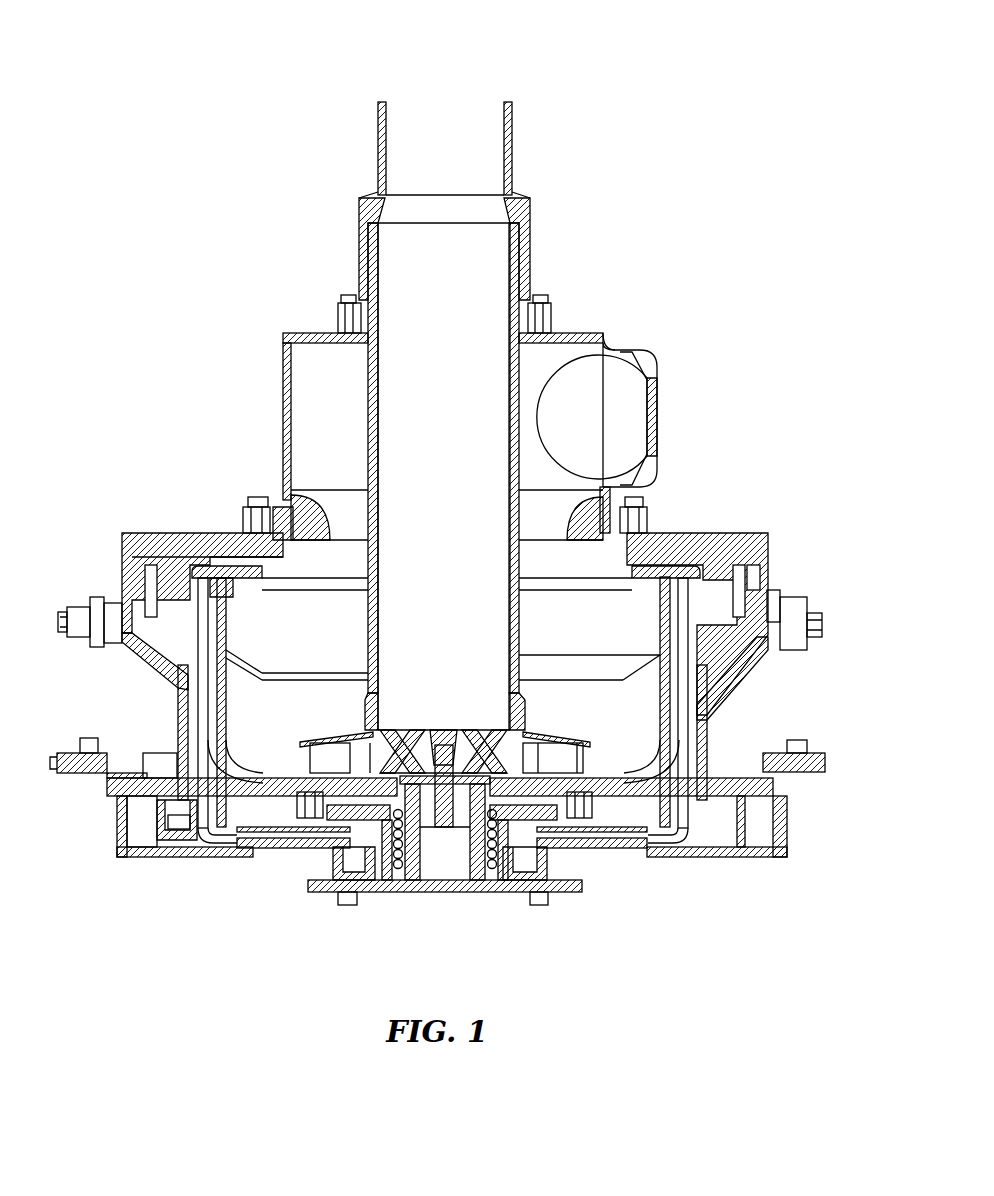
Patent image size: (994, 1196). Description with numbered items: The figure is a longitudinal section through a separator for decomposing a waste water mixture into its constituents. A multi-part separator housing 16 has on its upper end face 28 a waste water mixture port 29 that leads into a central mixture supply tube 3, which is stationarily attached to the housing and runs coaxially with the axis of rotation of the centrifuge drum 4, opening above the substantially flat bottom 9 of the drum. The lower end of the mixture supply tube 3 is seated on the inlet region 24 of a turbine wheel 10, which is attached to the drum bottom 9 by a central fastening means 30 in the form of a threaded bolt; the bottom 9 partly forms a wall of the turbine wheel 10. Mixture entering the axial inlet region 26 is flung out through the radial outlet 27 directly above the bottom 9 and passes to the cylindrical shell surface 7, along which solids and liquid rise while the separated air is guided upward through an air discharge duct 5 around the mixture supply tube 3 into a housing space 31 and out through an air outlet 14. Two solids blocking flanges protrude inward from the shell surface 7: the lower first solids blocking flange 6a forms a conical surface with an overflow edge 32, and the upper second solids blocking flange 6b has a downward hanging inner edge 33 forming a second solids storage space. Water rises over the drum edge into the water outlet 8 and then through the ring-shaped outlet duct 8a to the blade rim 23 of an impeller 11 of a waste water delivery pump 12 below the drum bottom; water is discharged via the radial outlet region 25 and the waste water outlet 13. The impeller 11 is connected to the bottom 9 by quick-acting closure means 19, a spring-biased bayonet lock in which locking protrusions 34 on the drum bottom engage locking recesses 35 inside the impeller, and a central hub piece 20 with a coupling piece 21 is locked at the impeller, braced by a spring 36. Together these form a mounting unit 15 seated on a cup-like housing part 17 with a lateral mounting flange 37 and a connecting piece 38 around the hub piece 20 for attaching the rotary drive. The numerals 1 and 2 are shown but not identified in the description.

The upper end face 28 is at (570, 60).
The waste water mixture port 29 is at (512, 142).
The housing space 31 is at (312, 355).
The mixture supply tube 3 is at (368, 395).
The air outlet 14 is at (640, 415).
The centrifuge drum 4 is at (258, 510).
The air discharge duct 5 is at (333, 528).
The second solids blocking flange 6b is at (262, 582).
The inner edge 33 is at (190, 575).
The shell surface 7 is at (145, 607).
The bolt 2 is at (608, 618).
The ring-shaped outlet duct 8a is at (672, 560).
The separator housing 16 is at (762, 535).
The water outlet 8 is at (715, 633).
The overflow edge 32 is at (296, 680).
The first solids blocking flange 6a is at (200, 688).
The valve body 1 is at (620, 699).
The lateral mounting flange 37 is at (795, 640).
The turbine wheel 10 is at (360, 748).
The central fastening means 30 is at (440, 733).
The axial inlet region 26 is at (483, 724).
The radial outlet 27 is at (298, 766).
The passage 34 is at (582, 800).
The inlet region 24 is at (177, 789).
The bottom 9 is at (198, 815).
The radial outlet region 25 is at (147, 812).
The waste water outlet 13 is at (140, 838).
The blade rim 23 is at (178, 830).
The impeller 11 is at (212, 862).
The quick-acting closure means 19 is at (280, 848).
The mounting unit 15 is at (592, 850).
The locking recesses 35 is at (612, 840).
The housing part 17 is at (678, 852).
The waste water delivery pump 12 is at (700, 830).
The spring 36 is at (396, 860).
The hub piece 20 is at (418, 832).
The coupling piece 21 is at (443, 867).
The connecting piece 38 is at (541, 898).